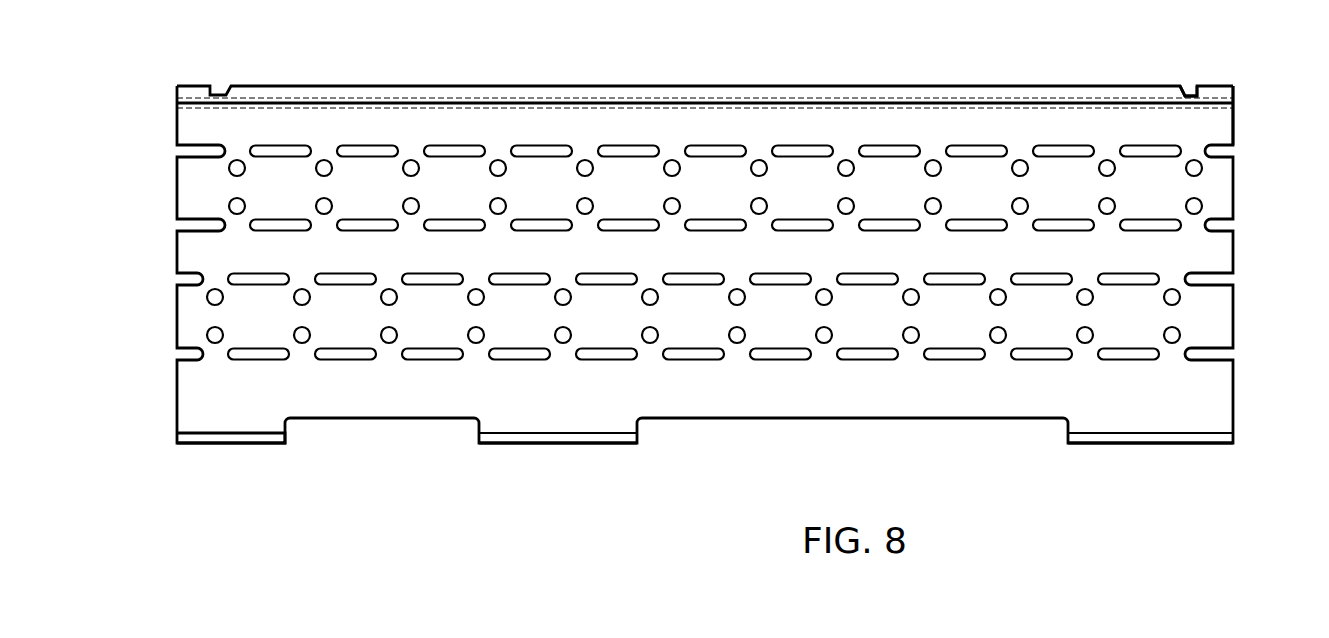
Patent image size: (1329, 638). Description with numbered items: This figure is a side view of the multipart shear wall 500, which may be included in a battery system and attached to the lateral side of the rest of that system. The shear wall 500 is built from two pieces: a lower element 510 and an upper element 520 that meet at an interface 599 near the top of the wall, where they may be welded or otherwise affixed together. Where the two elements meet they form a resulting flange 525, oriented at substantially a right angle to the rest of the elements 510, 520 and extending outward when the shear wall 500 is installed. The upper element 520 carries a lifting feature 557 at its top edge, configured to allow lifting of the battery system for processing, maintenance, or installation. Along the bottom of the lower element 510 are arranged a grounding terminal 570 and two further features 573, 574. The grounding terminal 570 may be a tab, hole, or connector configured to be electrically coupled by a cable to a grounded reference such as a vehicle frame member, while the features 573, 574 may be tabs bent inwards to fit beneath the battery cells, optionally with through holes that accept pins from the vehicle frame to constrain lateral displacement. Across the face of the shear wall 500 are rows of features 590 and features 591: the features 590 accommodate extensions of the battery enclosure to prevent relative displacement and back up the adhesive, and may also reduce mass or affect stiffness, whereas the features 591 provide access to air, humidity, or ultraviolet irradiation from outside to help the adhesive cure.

The multipart shear wall 500 is at (1323, 231).
The lower element 510 is at (170, 186).
The upper element 520 is at (170, 82).
The flange 525 is at (166, 97).
The lifting feature 557 is at (1222, 84).
The interface 599 is at (1247, 102).
The features (slots) 590 is at (1152, 232).
The features (holes) 591 is at (1180, 304).
The grounding terminal 570 is at (232, 447).
The feature (tab) 573 is at (553, 447).
The feature (tab) 574 is at (1148, 447).